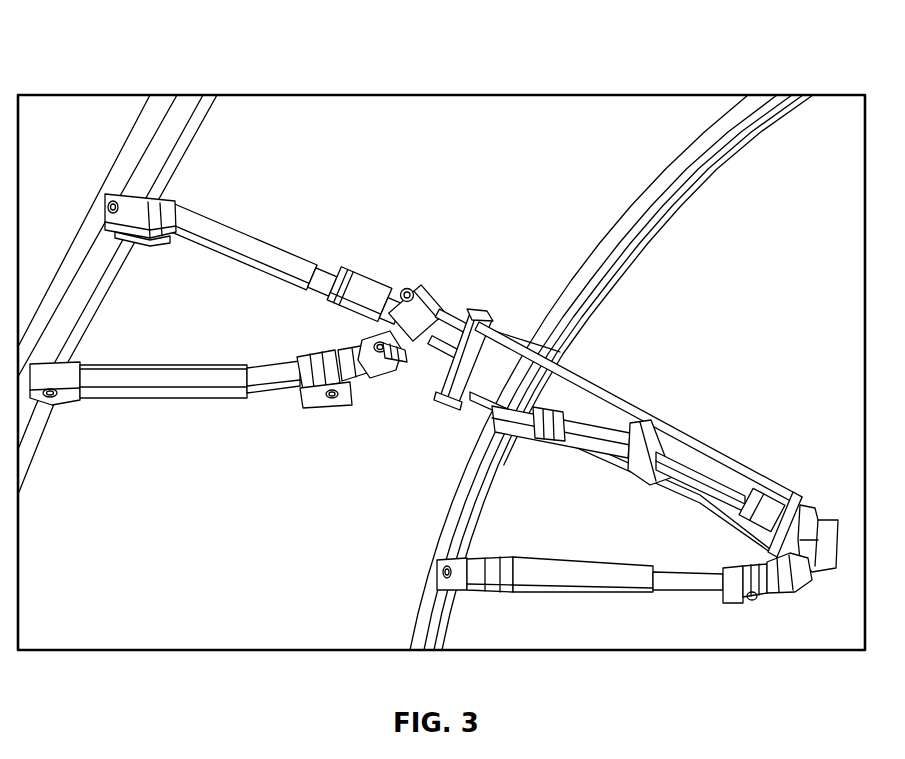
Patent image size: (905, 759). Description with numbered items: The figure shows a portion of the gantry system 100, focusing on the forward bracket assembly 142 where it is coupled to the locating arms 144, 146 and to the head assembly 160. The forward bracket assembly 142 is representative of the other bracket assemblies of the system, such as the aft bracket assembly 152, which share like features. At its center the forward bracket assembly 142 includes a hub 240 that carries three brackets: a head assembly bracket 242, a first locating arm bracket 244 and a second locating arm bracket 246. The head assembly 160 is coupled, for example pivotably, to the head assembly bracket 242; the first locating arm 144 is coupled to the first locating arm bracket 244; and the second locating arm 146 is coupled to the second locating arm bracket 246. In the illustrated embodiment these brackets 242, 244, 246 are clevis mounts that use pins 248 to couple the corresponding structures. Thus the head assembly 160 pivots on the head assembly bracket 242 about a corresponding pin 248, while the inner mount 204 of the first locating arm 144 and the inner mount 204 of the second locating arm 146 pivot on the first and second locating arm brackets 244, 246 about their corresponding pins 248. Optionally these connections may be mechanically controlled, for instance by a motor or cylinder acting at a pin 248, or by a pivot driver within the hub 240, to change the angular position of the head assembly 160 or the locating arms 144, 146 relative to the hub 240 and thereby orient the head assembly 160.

The gantry system 100 is at (470, 112).
The forward bracket assembly 142 is at (344, 309).
The first locating arm 144 is at (190, 398).
The second locating arm 146 is at (252, 252).
The aft bracket assembly 152 is at (671, 607).
The head assembly 160 is at (670, 395).
The inner mount 204 is at (397, 290).
The hub 240 is at (478, 305).
The head assembly bracket 242 is at (495, 342).
The first locating arm bracket 244 is at (392, 362).
The second locating arm bracket 246 is at (410, 289).
The pin 248 is at (414, 291).